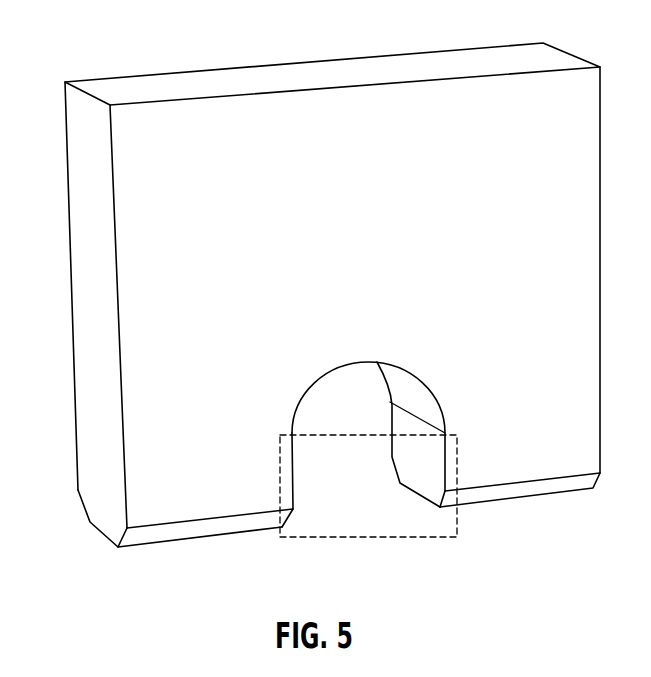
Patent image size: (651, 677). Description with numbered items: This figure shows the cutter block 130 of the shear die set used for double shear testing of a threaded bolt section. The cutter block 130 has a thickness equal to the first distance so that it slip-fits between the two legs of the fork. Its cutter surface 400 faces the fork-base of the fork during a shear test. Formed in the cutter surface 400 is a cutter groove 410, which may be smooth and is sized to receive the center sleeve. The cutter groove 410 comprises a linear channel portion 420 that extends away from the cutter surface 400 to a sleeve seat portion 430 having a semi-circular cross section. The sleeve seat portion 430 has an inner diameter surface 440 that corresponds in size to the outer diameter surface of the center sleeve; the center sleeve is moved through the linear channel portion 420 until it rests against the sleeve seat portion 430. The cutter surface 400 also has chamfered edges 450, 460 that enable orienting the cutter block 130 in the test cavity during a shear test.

The cutter block 130 is at (365, 123).
The cutter surface 400 is at (525, 498).
The cutter groove 410 is at (399, 418).
The linear channel portion 420 is at (457, 462).
The sleeve seat portion 430 is at (425, 383).
The inner diameter surface 440 is at (305, 402).
The chamfered edge 450 is at (183, 540).
The chamfered edge 460 is at (100, 532).